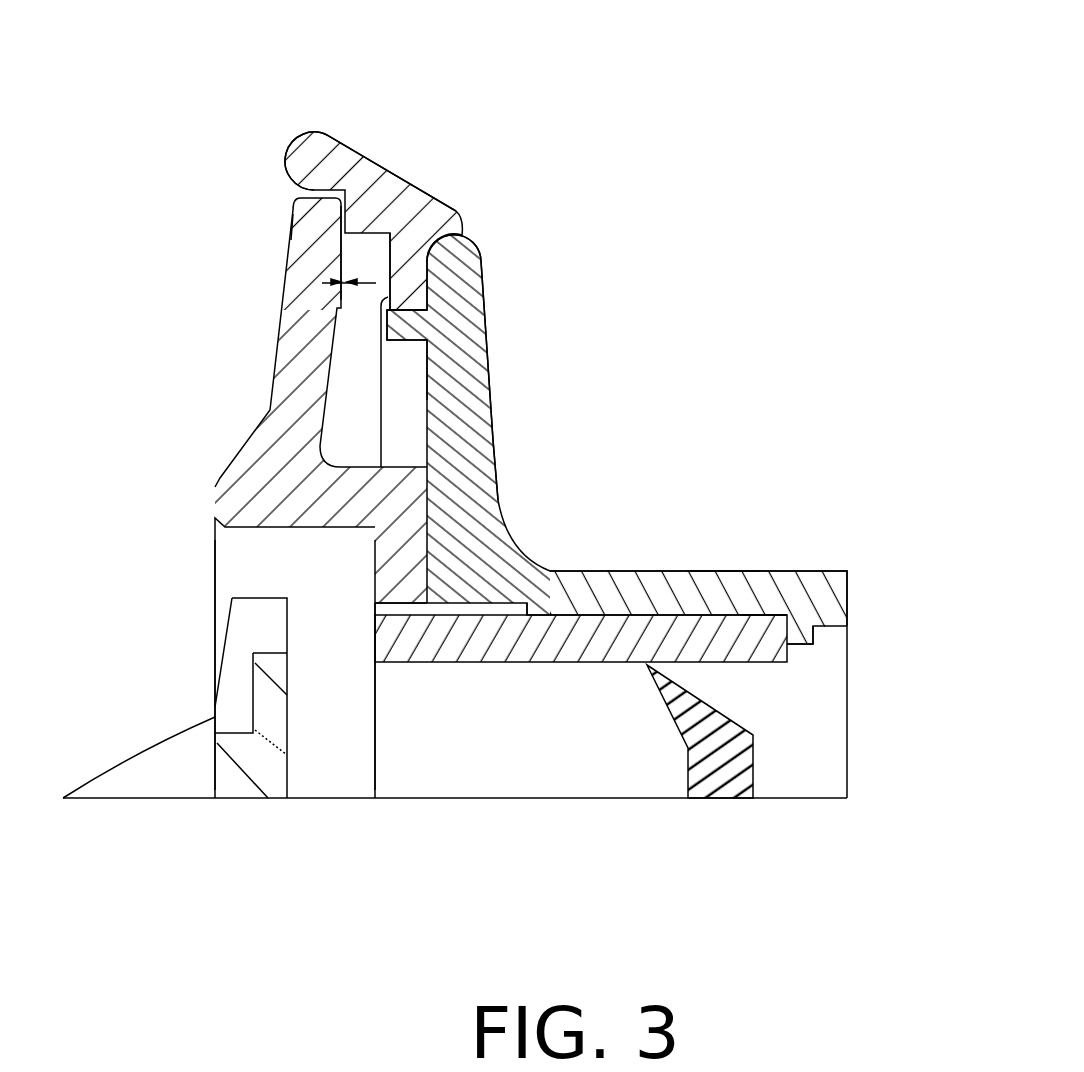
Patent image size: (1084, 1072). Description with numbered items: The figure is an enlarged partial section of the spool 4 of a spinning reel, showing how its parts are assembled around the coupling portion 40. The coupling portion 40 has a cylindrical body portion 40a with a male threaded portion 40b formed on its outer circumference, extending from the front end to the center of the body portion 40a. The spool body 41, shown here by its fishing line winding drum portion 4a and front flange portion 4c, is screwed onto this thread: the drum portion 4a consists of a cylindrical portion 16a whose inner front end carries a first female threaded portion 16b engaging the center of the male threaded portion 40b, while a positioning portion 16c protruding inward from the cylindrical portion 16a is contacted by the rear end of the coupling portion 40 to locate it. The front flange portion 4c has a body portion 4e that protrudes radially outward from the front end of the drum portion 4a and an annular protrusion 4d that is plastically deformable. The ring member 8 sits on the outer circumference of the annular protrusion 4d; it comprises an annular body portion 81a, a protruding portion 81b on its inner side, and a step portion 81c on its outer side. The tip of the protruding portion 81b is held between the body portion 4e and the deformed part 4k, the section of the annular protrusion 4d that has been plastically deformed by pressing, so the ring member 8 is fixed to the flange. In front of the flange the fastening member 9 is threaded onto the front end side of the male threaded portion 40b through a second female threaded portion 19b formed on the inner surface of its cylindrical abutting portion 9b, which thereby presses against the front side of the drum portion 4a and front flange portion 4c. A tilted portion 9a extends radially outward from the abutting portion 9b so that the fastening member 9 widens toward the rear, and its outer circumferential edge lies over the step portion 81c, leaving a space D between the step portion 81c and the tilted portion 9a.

The spool 4 is at (758, 198).
The fishing line winding drum portion 4a is at (803, 556).
The front flange portion 4c is at (487, 313).
The annular protrusion 4d is at (433, 359).
The body portion 4e is at (470, 423).
The deformed part 4k is at (340, 330).
The ring member 8 is at (405, 153).
The body portion 81a is at (449, 188).
The protruding portion 81b is at (408, 275).
The step portion 81c is at (297, 203).
The fastening member 9 is at (213, 405).
The tilted portion 9a is at (310, 236).
The abutting portion 9b is at (390, 562).
The space D is at (322, 255).
The cylindrical portion 16a is at (763, 582).
The first female threaded portion 16b is at (505, 616).
The positioning portion 16c is at (800, 630).
The second female threaded portion 19b is at (375, 712).
The coupling portion 40 is at (540, 667).
The body portion 40a is at (612, 650).
The male threaded portion 40b is at (465, 602).
The spool body 41 is at (724, 562).